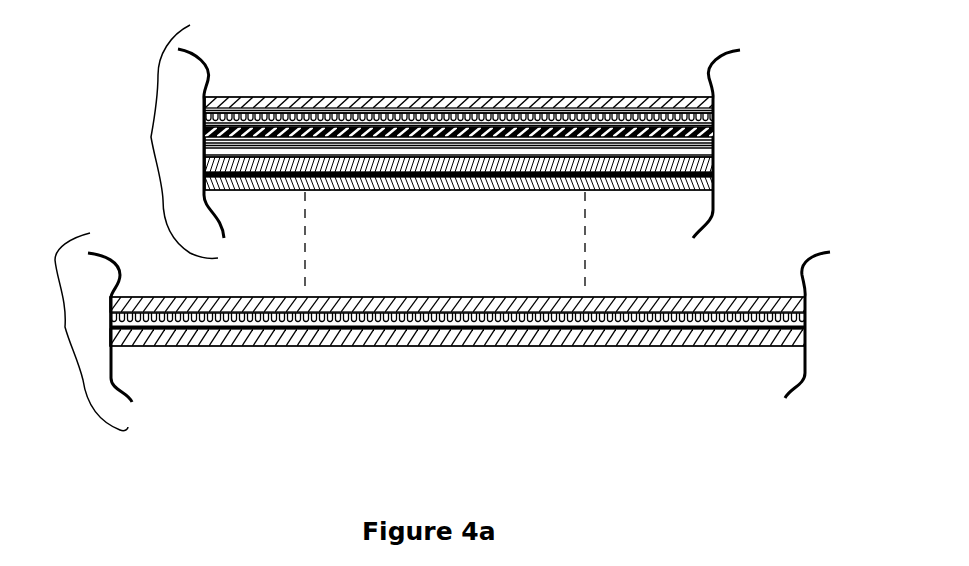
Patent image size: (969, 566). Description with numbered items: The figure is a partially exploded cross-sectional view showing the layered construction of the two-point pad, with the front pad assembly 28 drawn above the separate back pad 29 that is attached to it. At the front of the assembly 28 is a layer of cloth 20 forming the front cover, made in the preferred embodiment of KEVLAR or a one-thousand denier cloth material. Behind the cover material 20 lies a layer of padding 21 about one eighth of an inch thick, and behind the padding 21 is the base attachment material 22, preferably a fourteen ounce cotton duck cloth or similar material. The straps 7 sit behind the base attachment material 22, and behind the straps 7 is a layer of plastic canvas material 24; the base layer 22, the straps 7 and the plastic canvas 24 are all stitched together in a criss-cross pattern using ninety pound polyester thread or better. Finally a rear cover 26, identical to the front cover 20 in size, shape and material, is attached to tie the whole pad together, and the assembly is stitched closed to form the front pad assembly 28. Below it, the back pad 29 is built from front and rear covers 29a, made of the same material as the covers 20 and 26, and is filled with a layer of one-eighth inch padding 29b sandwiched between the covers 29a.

The front pad assembly 28 is at (372, 82).
The layer of cloth 20 is at (563, 95).
The layer of padding 21 is at (715, 113).
The base attachment material 22 is at (722, 135).
The straps 7 is at (715, 148).
The plastic canvas material 24 is at (715, 168).
The rear cover 26 is at (620, 190).
The back pad 29 is at (51, 339).
The front and rear covers 29a is at (448, 298).
The layer of padding 29b is at (793, 317).